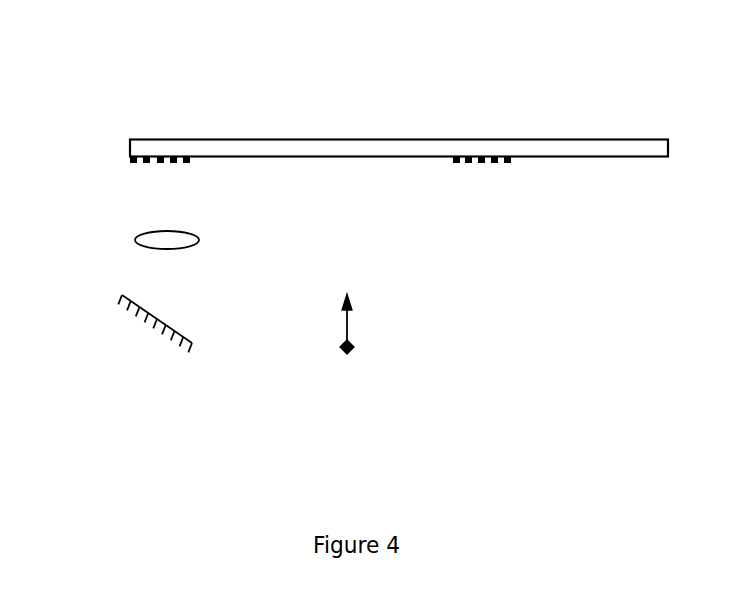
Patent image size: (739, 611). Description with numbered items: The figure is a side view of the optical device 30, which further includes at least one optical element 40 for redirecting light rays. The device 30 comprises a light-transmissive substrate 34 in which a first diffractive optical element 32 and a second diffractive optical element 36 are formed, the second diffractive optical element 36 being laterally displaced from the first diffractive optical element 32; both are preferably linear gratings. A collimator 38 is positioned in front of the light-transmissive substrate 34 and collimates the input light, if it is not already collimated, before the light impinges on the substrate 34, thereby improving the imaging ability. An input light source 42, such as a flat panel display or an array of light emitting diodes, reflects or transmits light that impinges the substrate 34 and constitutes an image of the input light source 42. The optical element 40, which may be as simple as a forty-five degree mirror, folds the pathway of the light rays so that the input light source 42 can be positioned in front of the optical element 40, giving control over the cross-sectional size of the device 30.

The device 30 is at (348, 125).
The first diffractive optical element 32 is at (154, 184).
The light-transmissive substrate 34 is at (399, 130).
The second diffractive optical element 36 is at (497, 184).
The collimator 38 is at (151, 242).
The optical element 40 is at (148, 323).
The input light source 42 is at (366, 324).